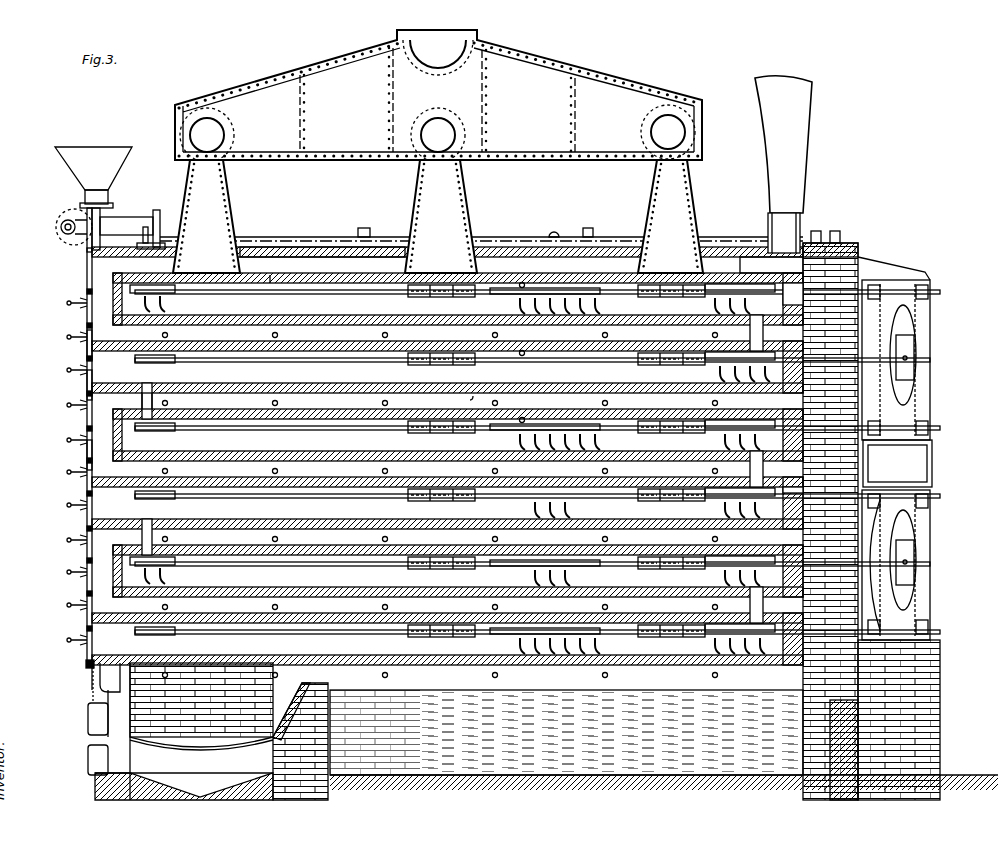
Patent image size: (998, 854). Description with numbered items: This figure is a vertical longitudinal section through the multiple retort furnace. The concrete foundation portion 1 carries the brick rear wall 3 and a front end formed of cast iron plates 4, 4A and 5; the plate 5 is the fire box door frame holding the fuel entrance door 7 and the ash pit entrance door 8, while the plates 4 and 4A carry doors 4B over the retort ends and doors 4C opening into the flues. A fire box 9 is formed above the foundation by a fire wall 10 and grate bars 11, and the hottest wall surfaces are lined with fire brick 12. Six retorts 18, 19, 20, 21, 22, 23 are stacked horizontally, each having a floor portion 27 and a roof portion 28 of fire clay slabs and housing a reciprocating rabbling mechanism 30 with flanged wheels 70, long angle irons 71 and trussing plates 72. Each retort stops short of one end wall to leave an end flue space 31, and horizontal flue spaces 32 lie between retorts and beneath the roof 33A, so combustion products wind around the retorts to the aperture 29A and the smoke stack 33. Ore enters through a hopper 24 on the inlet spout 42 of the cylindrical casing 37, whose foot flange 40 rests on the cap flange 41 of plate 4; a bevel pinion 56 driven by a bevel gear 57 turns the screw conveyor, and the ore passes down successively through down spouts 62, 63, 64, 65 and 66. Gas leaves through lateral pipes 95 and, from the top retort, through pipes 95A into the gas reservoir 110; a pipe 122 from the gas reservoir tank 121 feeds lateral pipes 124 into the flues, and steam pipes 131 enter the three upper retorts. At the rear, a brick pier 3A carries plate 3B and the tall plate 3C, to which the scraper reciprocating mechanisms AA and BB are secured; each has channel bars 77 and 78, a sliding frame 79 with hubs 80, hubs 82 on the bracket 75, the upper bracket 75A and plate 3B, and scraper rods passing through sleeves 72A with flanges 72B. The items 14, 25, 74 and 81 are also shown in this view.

The foundation portion 1 is at (95, 790).
The rear wall 3 is at (840, 242).
The brick pier portion 3A is at (940, 706).
The plate 3B is at (940, 636).
The plate 3C is at (862, 250).
The cast iron plate 4 is at (87, 440).
The cast iron plate 4A is at (87, 455).
The door 4B is at (87, 345).
The door 4C is at (87, 385).
The fire box door frame plate 5 is at (88, 665).
The fuel entrance door 7 is at (88, 715).
The ash pit entrance door 8 is at (88, 751).
The fire box 9 is at (95, 691).
The fire wall 10 is at (290, 712).
The grate bars 11 is at (232, 740).
The fire brick 12 is at (175, 700).
The gas reservoir tank 121 is at (145, 731).
The fitting on top plate 14 is at (588, 228).
The retort 18 is at (447, 639).
The retort 19 is at (458, 571).
The retort 20 is at (447, 503).
The retort 21 is at (458, 435).
The retort 22 is at (447, 367).
The upper retort 23 is at (458, 299).
The hopper 24 is at (96, 150).
The feed conduit 25 is at (125, 218).
The floor portion 27 is at (295, 502).
The roof portion 28 is at (140, 400).
The aperture 29A is at (784, 253).
The reciprocating rabbling mechanism 30 is at (550, 469).
The flue space 31 is at (105, 300).
The flue space 32 is at (447, 458).
The smoke stack 33 is at (788, 158).
The roof 33A is at (290, 248).
The cylindrical casing 37 is at (150, 212).
The foot flange 40 is at (87, 250).
The cap flange 41 is at (87, 256).
The inlet spout 42 is at (100, 212).
The bevel pinion 56 is at (78, 220).
The bevel gear 57 is at (60, 222).
The down spout 62 is at (765, 328).
The down spout 63 is at (149, 388).
The down spout 64 is at (765, 464).
The down spout 65 is at (140, 535).
The down spout 66 is at (765, 600).
The flanged wheels 70 is at (147, 435).
The angle irons 71 is at (336, 467).
The trussing and stiffening plate 72 is at (428, 434).
The sleeve 72A is at (777, 388).
The flange 72B is at (862, 262).
The inspection fitting 74 is at (362, 228).
The bracket 75 is at (933, 455).
The bracket 75A is at (915, 272).
The channel bar 77 is at (884, 565).
The channel bar 78 is at (932, 512).
The sliding frame 79 is at (910, 315).
The hubs 80 is at (930, 298).
The lower bearing 81 is at (925, 606).
The hubs 82 is at (881, 564).
The pipe 95 is at (442, 471).
The pipes 95A is at (438, 216).
The gas reservoir 110 is at (320, 97).
The pipe 122 is at (550, 232).
The lateral pipes 124 is at (440, 502).
The laterally projecting pipes 131 is at (525, 420).
The scraper reciprocating mechanism AA is at (914, 360).
The scraper reciprocating mechanism BB is at (914, 562).